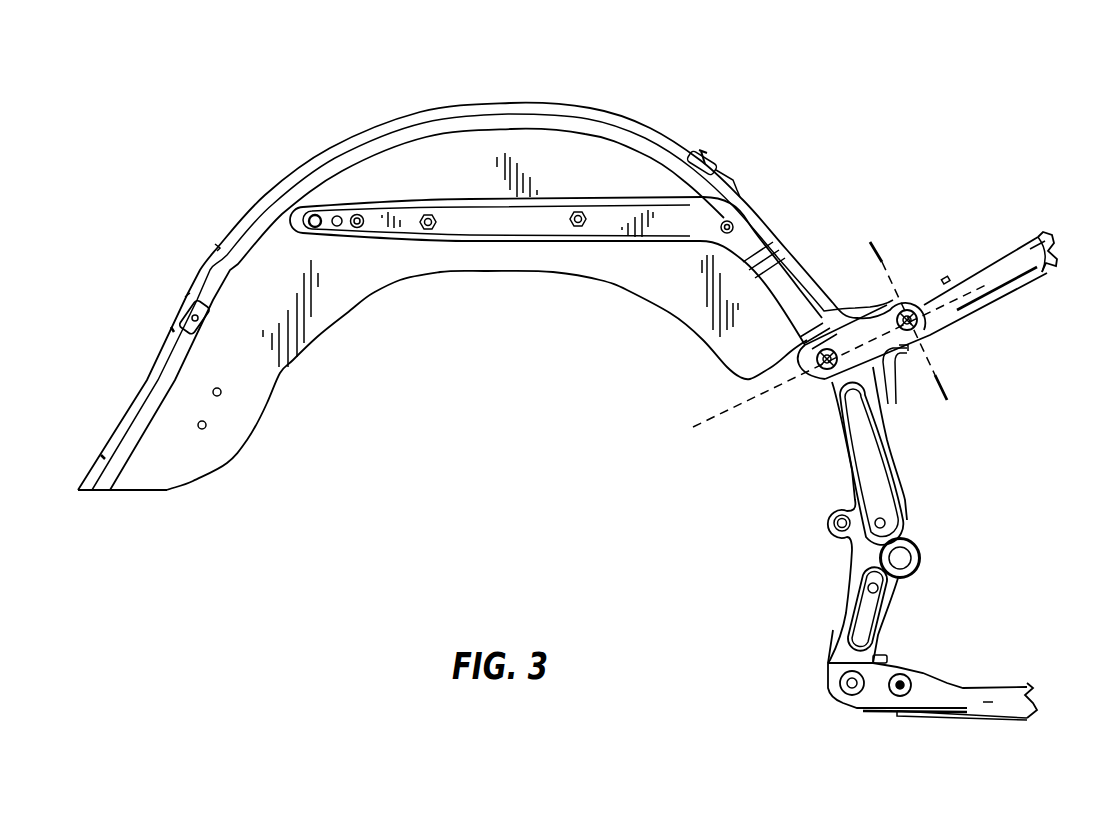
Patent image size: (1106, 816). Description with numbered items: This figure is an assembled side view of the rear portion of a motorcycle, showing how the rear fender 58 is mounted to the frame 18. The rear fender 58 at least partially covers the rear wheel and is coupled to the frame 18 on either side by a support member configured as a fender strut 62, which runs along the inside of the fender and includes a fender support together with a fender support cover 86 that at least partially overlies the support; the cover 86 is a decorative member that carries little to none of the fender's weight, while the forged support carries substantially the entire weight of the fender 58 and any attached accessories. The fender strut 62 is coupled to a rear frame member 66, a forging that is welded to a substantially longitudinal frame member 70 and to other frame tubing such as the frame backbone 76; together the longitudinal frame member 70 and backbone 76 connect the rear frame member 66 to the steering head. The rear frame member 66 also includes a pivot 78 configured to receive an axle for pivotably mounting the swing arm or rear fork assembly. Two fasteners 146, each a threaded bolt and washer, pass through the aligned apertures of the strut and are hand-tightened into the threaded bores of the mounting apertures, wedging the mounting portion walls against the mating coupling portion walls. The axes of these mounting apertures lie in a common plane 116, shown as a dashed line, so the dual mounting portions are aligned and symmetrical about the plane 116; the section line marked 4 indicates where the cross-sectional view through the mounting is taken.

The rear fender 58 is at (462, 112).
The fender strut 62 is at (633, 256).
The fender support cover 86 is at (507, 220).
The fastener 146 is at (927, 331).
The frame backbone 76 is at (1037, 240).
The frame 18 is at (1058, 282).
The section line FIG. 4 is at (880, 254).
The common plane 116 is at (720, 418).
The rear frame member 66 is at (880, 487).
The pivot 78 is at (920, 558).
The longitudinal frame member 70 is at (1012, 690).